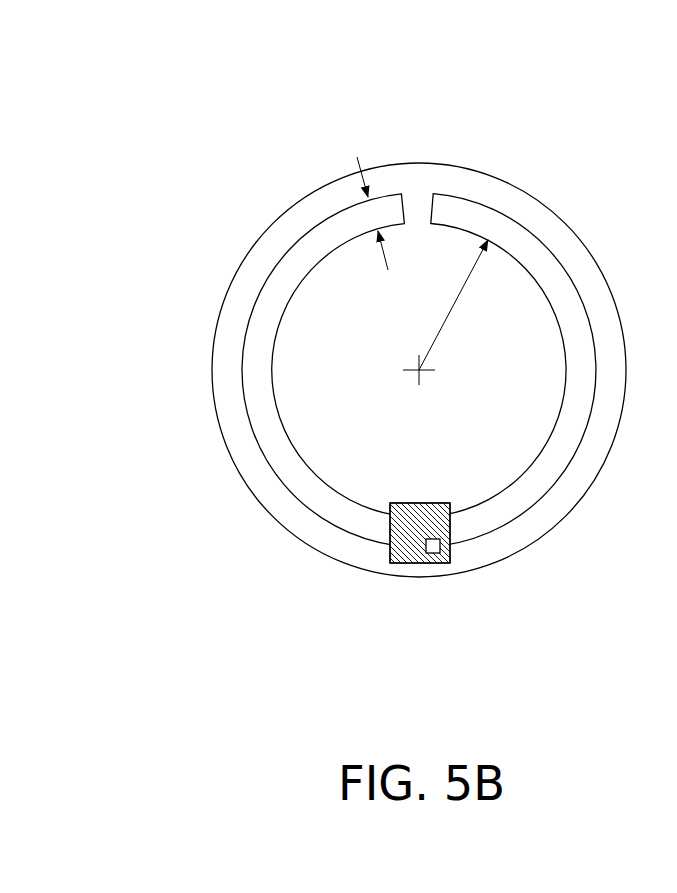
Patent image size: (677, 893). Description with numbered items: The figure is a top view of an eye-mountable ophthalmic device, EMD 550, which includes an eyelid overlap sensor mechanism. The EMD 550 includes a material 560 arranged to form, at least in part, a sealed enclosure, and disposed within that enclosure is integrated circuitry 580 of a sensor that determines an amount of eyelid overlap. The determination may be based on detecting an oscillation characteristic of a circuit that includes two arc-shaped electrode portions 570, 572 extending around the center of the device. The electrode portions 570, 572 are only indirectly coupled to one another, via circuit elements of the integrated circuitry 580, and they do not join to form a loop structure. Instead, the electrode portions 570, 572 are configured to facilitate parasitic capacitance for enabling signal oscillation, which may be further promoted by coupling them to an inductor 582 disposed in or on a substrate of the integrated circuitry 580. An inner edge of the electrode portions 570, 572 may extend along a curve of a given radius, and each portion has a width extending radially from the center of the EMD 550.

The EMD 550 is at (182, 92).
The material 560 is at (542, 227).
The electrode portion 570 is at (295, 472).
The electrode portion 572 is at (545, 472).
The integrated circuitry 580 is at (405, 542).
The inductor 582 is at (445, 549).